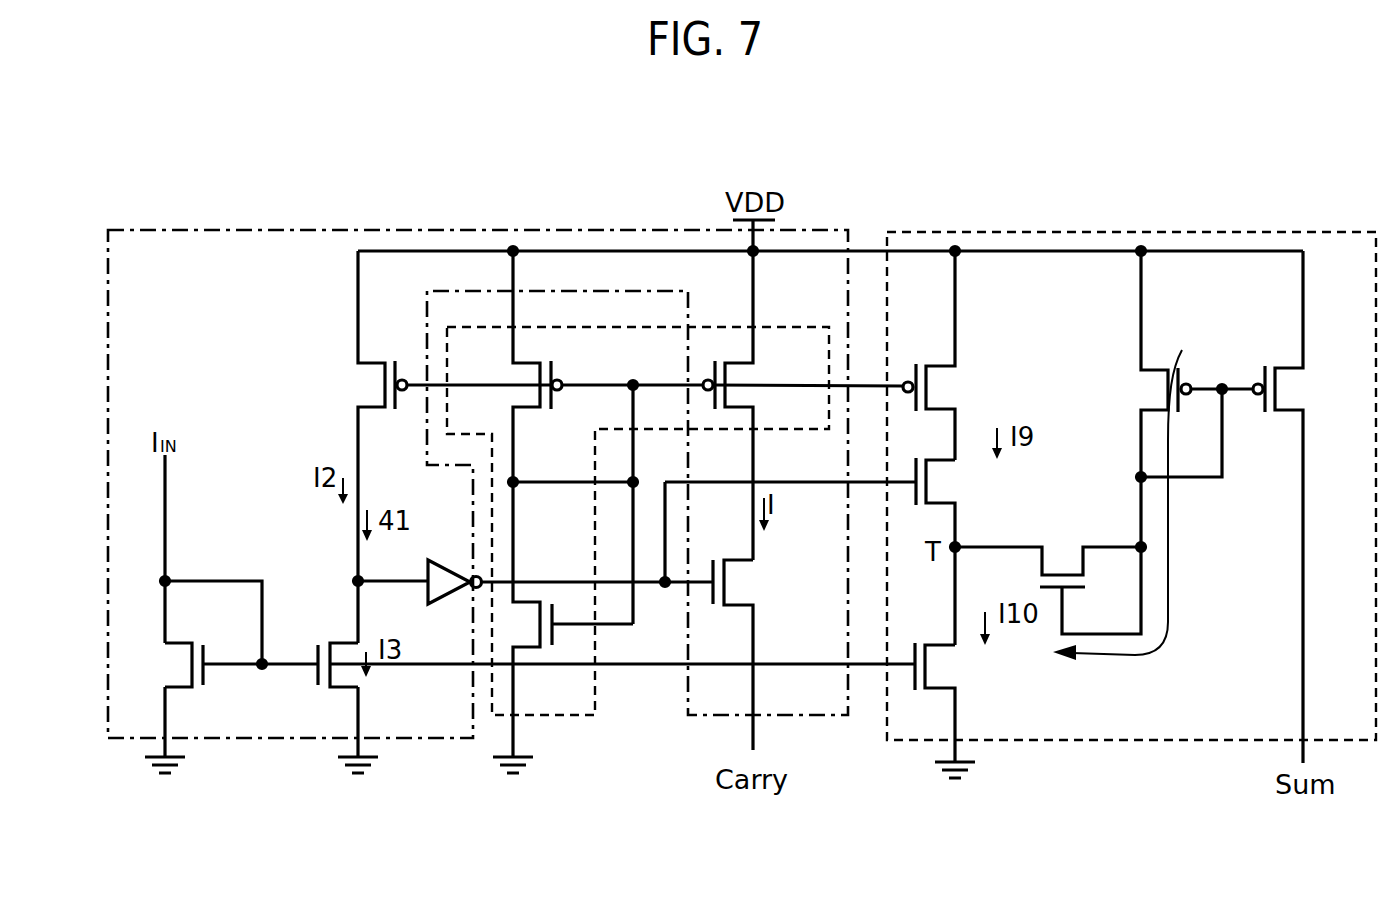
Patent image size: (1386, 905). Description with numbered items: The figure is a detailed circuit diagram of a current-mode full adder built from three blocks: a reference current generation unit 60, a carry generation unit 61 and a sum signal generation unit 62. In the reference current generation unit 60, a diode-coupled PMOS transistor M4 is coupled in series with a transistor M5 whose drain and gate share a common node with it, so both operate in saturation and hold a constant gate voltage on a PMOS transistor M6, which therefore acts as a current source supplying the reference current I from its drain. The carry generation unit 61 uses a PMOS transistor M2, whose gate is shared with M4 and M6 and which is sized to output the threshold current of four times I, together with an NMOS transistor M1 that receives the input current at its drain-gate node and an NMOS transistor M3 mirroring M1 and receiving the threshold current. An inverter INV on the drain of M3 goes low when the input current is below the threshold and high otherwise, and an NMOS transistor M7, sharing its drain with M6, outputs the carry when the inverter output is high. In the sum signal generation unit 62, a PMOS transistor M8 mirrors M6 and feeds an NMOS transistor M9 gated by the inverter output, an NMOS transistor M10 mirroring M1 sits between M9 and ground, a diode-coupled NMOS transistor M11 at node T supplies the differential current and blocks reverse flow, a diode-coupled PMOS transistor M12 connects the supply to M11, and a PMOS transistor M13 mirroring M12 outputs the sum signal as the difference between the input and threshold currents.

The reference current generation unit 60 is at (562, 716).
The carry generation unit 61 is at (205, 230).
The sum signal generation unit 62 is at (1312, 232).
The NMOS transistor M1 is at (195, 708).
The PMOS transistor M2 is at (361, 416).
The NMOS transistor M3 is at (341, 677).
The PMOS transistor M4 is at (515, 366).
The transistor M5 is at (551, 627).
The PMOS transistor M6 is at (754, 405).
The NMOS transistor M7 is at (756, 655).
The PMOS transistor M8 is at (951, 355).
The NMOS transistor M9 is at (958, 551).
The NMOS transistor M10 is at (965, 710).
The NMOS transistor M11 is at (1048, 572).
The PMOS transistor M12 is at (1169, 399).
The PMOS transistor M13 is at (1309, 507).
The inverter INV is at (420, 567).